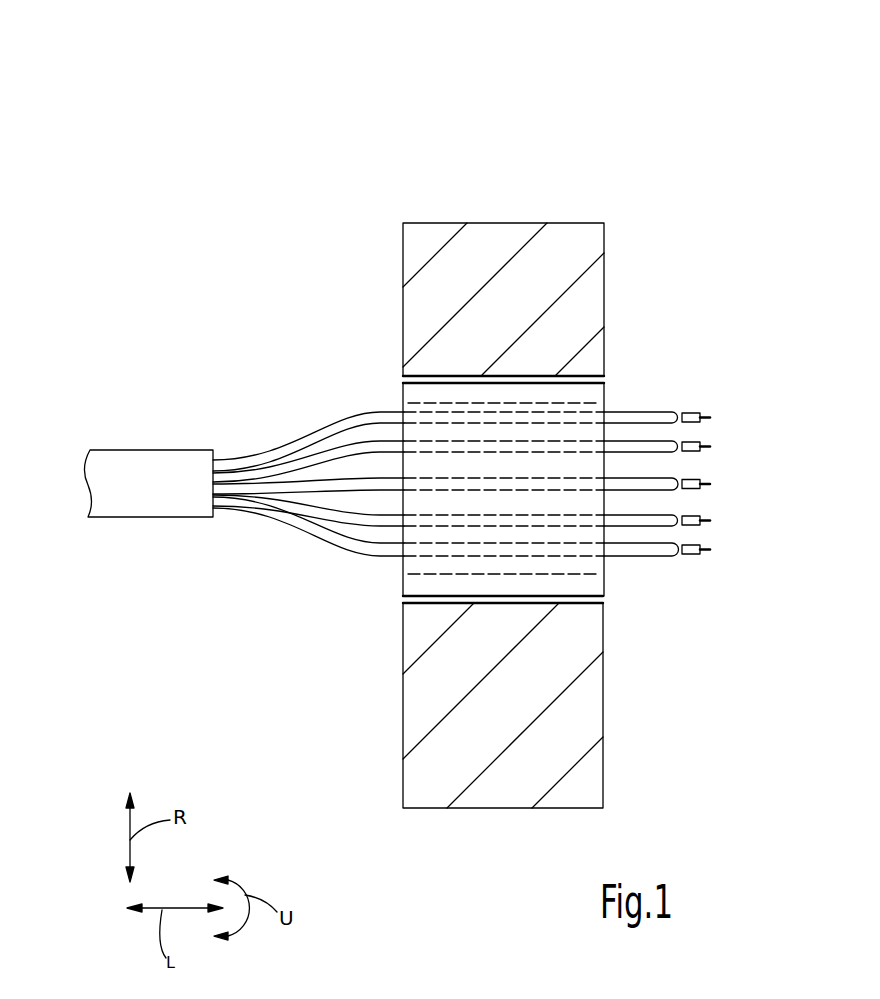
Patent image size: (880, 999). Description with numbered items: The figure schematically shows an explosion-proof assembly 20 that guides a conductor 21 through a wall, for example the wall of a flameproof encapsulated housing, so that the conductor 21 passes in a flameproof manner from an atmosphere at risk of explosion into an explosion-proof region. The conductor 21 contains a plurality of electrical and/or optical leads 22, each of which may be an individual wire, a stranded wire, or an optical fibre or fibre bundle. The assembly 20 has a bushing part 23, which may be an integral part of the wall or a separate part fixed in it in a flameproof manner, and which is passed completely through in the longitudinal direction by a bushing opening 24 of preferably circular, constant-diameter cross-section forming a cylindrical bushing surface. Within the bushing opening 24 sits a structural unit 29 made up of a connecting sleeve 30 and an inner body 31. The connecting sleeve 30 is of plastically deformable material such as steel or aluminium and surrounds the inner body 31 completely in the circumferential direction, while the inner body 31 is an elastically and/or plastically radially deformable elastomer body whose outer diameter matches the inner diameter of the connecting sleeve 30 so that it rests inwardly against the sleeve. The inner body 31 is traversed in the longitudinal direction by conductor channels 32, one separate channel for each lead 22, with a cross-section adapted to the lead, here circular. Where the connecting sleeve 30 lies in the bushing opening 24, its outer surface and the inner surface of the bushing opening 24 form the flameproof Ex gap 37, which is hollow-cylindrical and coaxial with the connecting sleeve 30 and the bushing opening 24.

The explosion-proof assembly 20 is at (651, 171).
The conductor 21 is at (125, 540).
The lead 22 is at (337, 465).
The bushing part 23 is at (588, 297).
The bushing opening 24 is at (595, 600).
The structural unit 29 is at (376, 589).
The connecting sleeve 30 is at (415, 395).
The inner body 31 is at (604, 567).
The conductor channel 32 is at (455, 410).
The Ex gap 37 is at (590, 377).